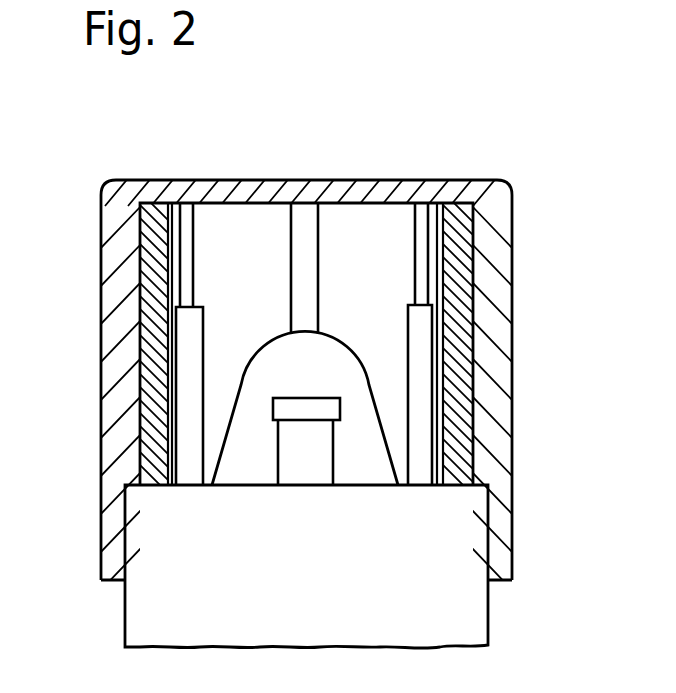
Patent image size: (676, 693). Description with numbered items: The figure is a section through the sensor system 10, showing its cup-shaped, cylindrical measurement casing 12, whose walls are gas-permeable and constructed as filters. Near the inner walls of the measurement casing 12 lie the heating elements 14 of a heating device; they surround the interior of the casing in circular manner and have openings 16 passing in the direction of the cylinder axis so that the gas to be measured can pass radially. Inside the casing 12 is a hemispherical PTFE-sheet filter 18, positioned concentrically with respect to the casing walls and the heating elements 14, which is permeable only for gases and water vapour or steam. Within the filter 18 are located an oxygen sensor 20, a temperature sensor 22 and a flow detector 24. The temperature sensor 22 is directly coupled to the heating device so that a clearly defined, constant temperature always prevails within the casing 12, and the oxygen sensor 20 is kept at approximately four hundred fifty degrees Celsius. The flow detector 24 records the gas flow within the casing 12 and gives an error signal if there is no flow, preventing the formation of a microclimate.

The sensor system 10 is at (530, 178).
The measurement casing 12 is at (500, 232).
The heating elements 14 is at (232, 233).
The openings 16 is at (296, 215).
The PTFE-sheet filter 18 is at (372, 372).
The oxygen sensor 20 is at (310, 408).
The temperature sensor 22 is at (183, 356).
The flow detector 24 is at (420, 437).